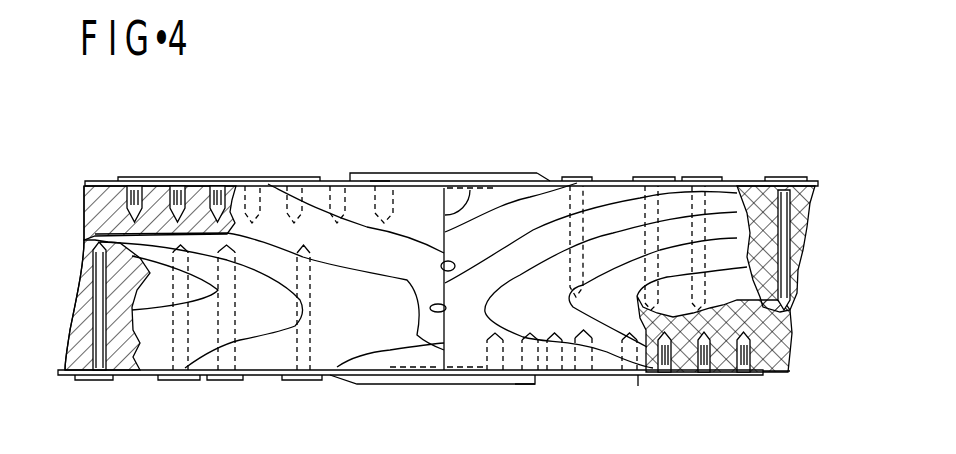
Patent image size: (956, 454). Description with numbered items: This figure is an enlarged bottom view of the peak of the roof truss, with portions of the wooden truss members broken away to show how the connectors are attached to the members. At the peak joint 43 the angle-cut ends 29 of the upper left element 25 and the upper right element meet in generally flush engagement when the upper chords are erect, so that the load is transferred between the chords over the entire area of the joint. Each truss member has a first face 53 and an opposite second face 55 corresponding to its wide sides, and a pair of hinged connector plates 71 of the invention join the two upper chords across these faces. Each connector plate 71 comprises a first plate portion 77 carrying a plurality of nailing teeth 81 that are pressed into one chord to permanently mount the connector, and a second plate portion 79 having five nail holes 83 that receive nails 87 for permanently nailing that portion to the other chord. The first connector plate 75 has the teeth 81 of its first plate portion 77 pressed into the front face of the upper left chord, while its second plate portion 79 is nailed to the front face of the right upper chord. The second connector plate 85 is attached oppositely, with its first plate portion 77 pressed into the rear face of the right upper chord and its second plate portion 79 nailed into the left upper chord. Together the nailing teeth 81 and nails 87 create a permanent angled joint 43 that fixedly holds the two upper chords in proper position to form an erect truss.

The upper left element 25 is at (352, 345).
The ends 29 is at (440, 260).
The peak joint 43 is at (470, 185).
The first face 53 is at (105, 183).
The second face 55 is at (148, 375).
The connector plate 71 is at (380, 173).
The first connector plate 75 is at (527, 177).
The first plate portion 77 is at (283, 182).
The second plate portion 79 is at (740, 183).
The nailing teeth 81 is at (207, 185).
The nail holes 83 is at (574, 183).
The second connector plate 85 is at (420, 385).
The nails 87 is at (96, 250).